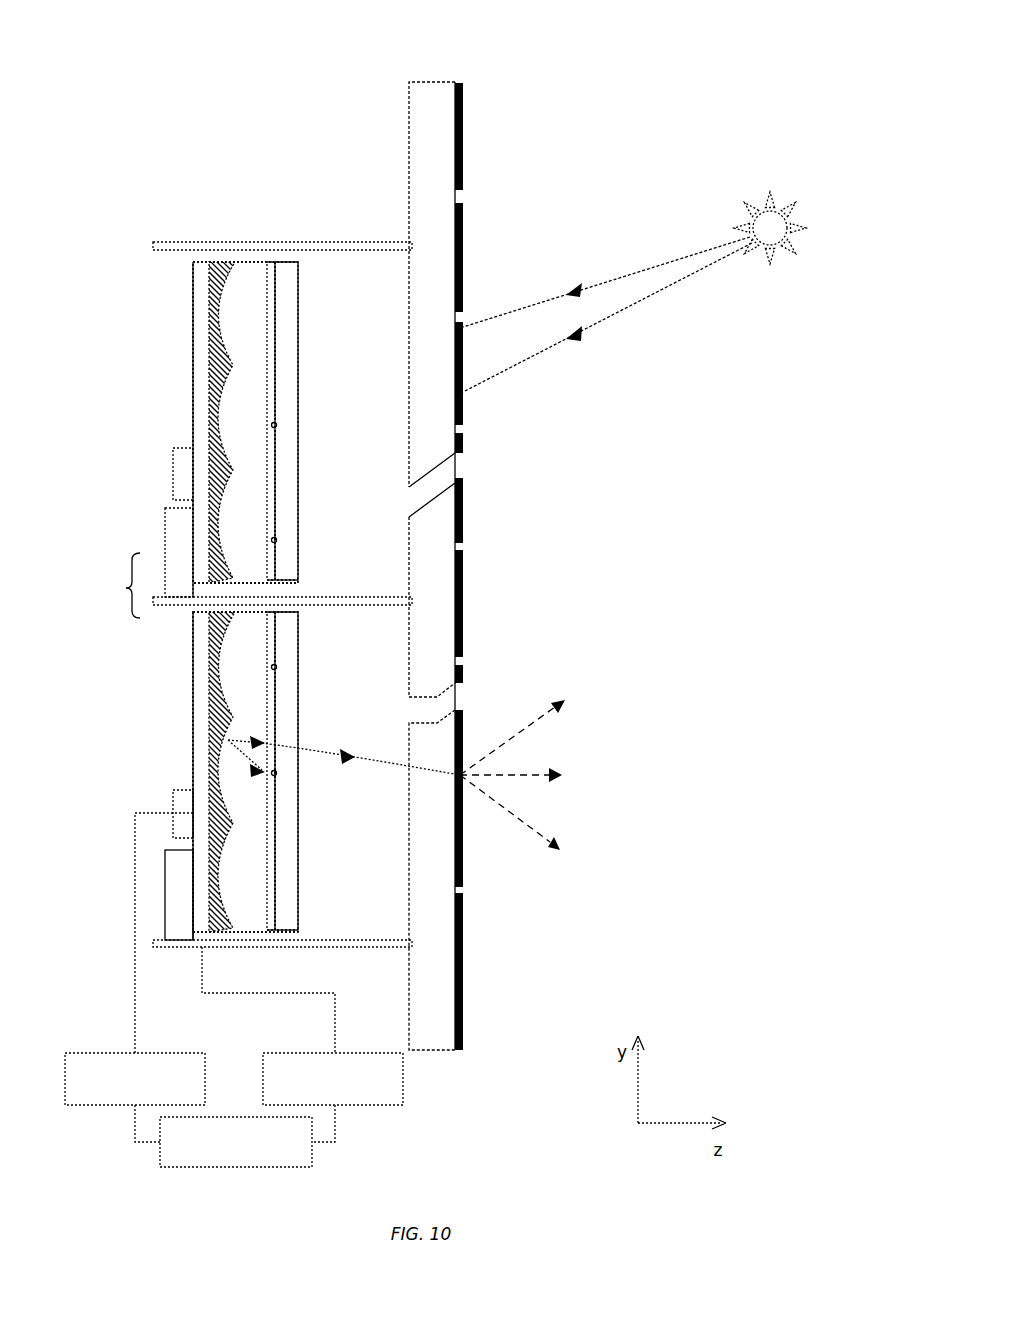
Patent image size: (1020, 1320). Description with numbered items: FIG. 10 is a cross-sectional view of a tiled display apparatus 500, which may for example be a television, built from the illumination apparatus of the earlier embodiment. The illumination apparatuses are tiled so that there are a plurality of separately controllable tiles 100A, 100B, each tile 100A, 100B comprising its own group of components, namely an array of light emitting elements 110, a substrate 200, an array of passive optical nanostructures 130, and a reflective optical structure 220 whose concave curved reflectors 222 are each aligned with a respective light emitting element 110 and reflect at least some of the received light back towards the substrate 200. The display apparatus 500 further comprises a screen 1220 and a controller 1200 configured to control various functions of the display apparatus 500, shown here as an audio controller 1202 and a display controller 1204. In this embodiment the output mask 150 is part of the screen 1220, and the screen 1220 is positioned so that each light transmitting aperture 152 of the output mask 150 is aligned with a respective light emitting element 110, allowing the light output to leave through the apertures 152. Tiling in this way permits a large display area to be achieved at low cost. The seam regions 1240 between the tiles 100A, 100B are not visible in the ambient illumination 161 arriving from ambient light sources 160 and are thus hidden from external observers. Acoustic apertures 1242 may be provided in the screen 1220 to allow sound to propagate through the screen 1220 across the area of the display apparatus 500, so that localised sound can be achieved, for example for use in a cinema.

The tiled display apparatus 500 is at (656, 50).
The tile 100A is at (193, 405).
The tile 100B is at (193, 695).
The light emitting element 110 is at (272, 317).
The passive optical nanostructures 130 is at (268, 268).
The output mask 150 is at (466, 520).
The light transmitting aperture 152 is at (463, 780).
The ambient light source 160 is at (768, 217).
The ambient illumination 161 is at (663, 265).
The substrate 200 is at (287, 262).
The optical structure 220 is at (447, 125).
The curved reflector 222 is at (212, 292).
The controller 1200 is at (236, 1142).
The audio controller 1202 is at (135, 1097).
The display controller 1204 is at (302, 1044).
The screen 1220 is at (411, 66).
The seam region 1240 is at (106, 585).
The acoustic aperture 1242 is at (462, 463).